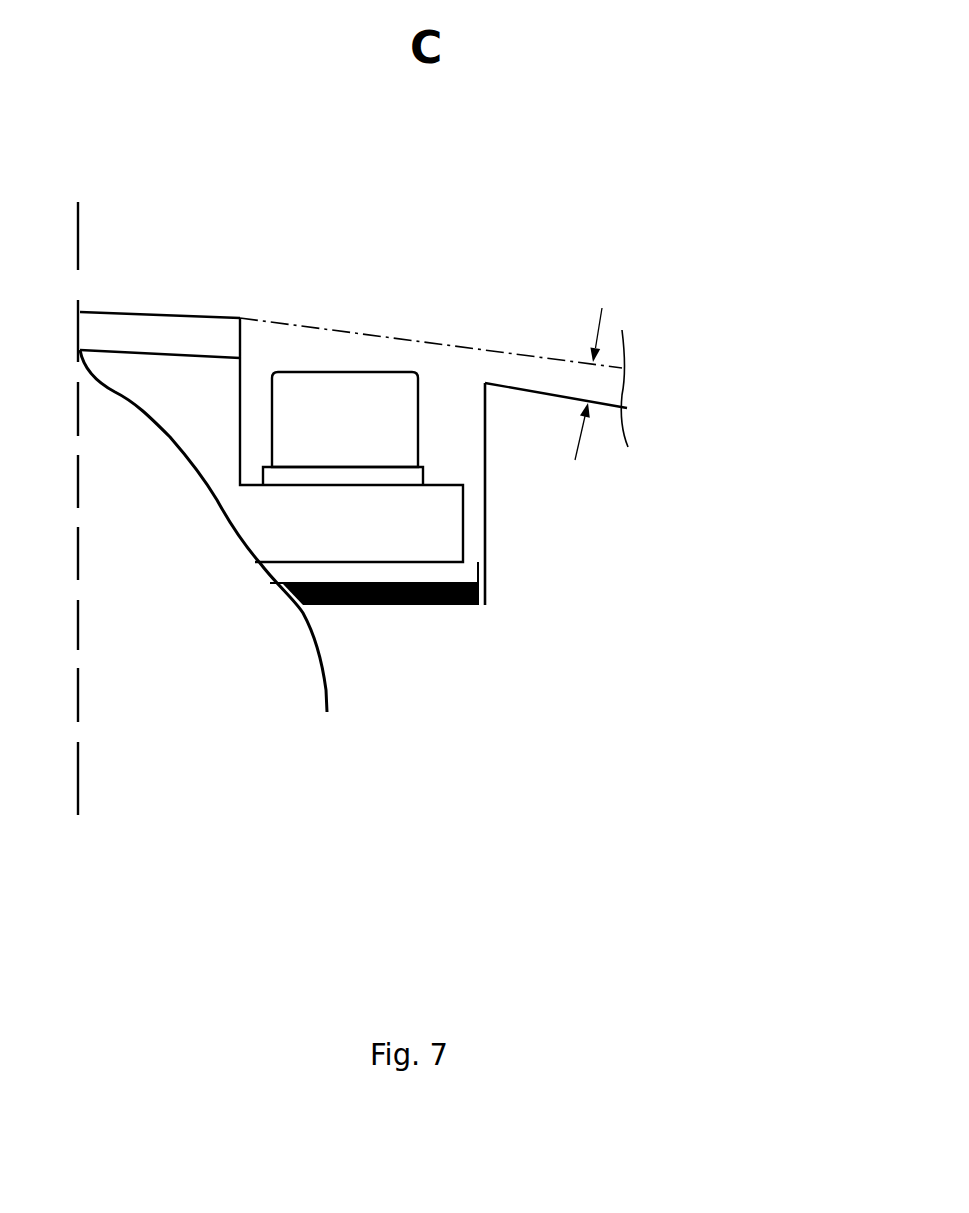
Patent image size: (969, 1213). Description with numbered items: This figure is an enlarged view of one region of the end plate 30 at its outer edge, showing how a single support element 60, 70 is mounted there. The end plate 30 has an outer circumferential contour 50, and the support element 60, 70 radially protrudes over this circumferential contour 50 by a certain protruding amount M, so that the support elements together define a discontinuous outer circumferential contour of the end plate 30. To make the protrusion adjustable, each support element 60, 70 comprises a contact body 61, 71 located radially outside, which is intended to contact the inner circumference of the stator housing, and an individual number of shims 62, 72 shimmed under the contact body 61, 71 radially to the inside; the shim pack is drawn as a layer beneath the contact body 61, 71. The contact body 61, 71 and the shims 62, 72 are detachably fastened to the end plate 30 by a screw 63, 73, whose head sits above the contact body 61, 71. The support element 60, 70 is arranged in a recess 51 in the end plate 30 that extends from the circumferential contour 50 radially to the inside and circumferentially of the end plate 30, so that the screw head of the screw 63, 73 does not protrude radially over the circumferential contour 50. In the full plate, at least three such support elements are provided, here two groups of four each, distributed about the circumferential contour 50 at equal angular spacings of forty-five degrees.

The end plate 30 is at (609, 201).
The circumferential contour 50 is at (623, 389).
The recess 51 is at (475, 531).
The support element 60 is at (191, 340).
The contact body 61 is at (275, 540).
The shim 62 is at (374, 639).
The screw 63 is at (355, 356).
The support element 70 is at (240, 304).
The contact body 71 is at (277, 527).
The shim 72 is at (412, 621).
The screw 73 is at (338, 400).